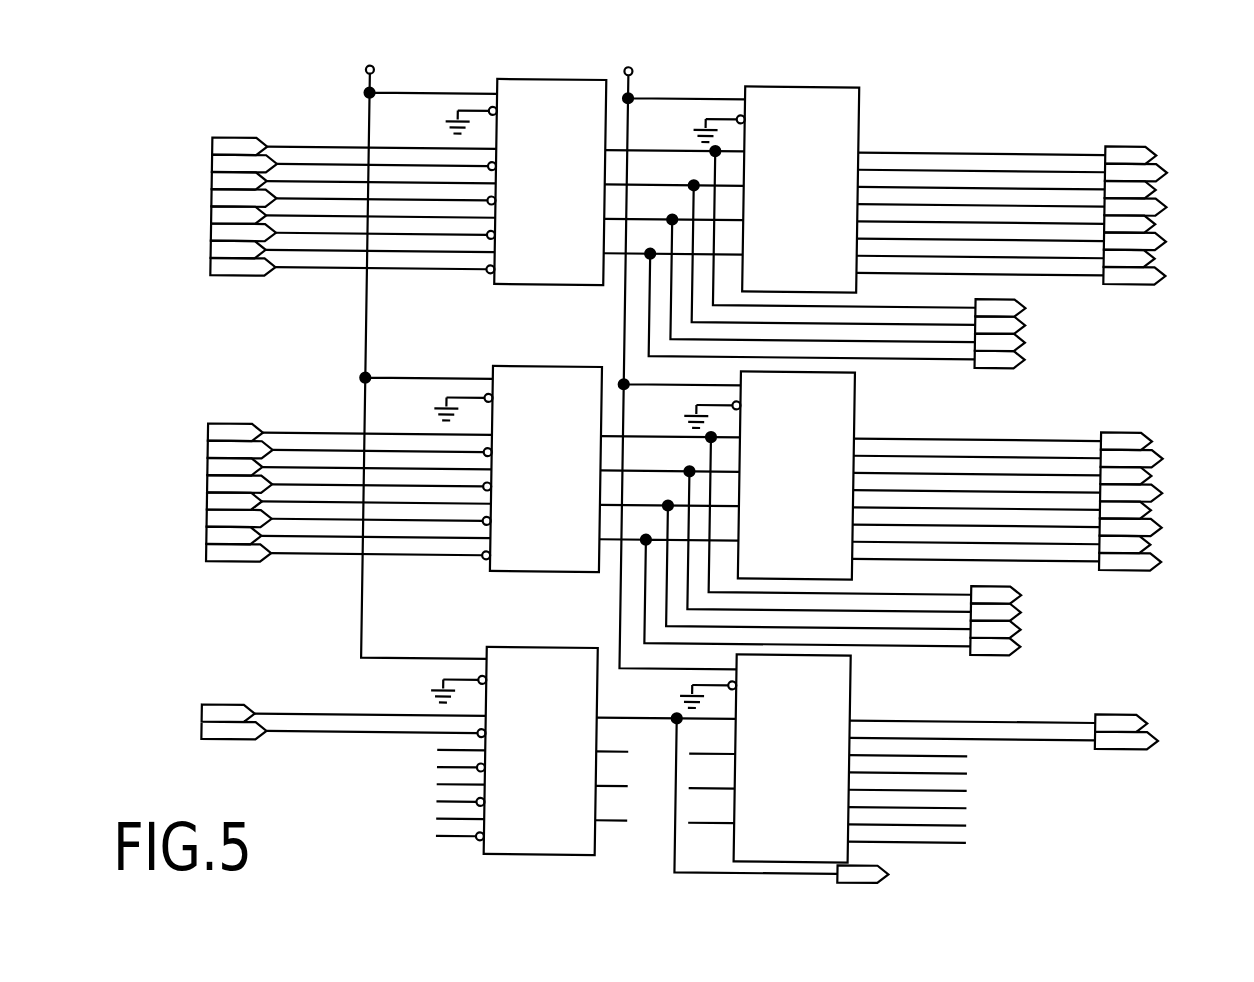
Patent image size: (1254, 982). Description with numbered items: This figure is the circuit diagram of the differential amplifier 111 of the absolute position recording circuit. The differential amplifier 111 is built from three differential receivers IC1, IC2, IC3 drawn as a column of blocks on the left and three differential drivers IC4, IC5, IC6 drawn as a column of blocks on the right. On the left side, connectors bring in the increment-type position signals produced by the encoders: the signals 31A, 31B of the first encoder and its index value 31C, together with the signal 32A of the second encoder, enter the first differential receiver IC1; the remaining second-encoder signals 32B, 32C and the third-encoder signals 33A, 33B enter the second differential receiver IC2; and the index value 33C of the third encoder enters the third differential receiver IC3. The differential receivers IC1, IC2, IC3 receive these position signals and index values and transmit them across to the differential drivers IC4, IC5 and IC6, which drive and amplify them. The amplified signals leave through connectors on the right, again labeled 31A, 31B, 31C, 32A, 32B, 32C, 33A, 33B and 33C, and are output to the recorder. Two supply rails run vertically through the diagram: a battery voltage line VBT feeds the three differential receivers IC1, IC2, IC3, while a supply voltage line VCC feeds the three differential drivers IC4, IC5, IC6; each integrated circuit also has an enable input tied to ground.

The differential amplifier 111 is at (222, 97).
The signal A of encoder 31 31A is at (688, 225).
The signal B of encoder 31 31B is at (688, 251).
The index value of encoder 31 31C is at (687, 281).
The signal A of encoder 32 32A is at (687, 312).
The signal B of encoder 32 32B is at (684, 512).
The index value of encoder 32 32C is at (683, 537).
The signal A of encoder 33 33A is at (683, 568).
The signal B of encoder 33 33B is at (682, 599).
The index value of encoder 33 33C is at (675, 793).
The differential receiver IC1 is at (523, 89).
The differential receiver IC2 is at (529, 369).
The differential receiver IC3 is at (539, 655).
The differential driver IC4 is at (850, 125).
The differential driver IC5 is at (852, 414).
The differential driver IC6 is at (849, 697).
The battery voltage terminal VBT is at (418, 342).
The supply voltage terminal VCC is at (670, 348).